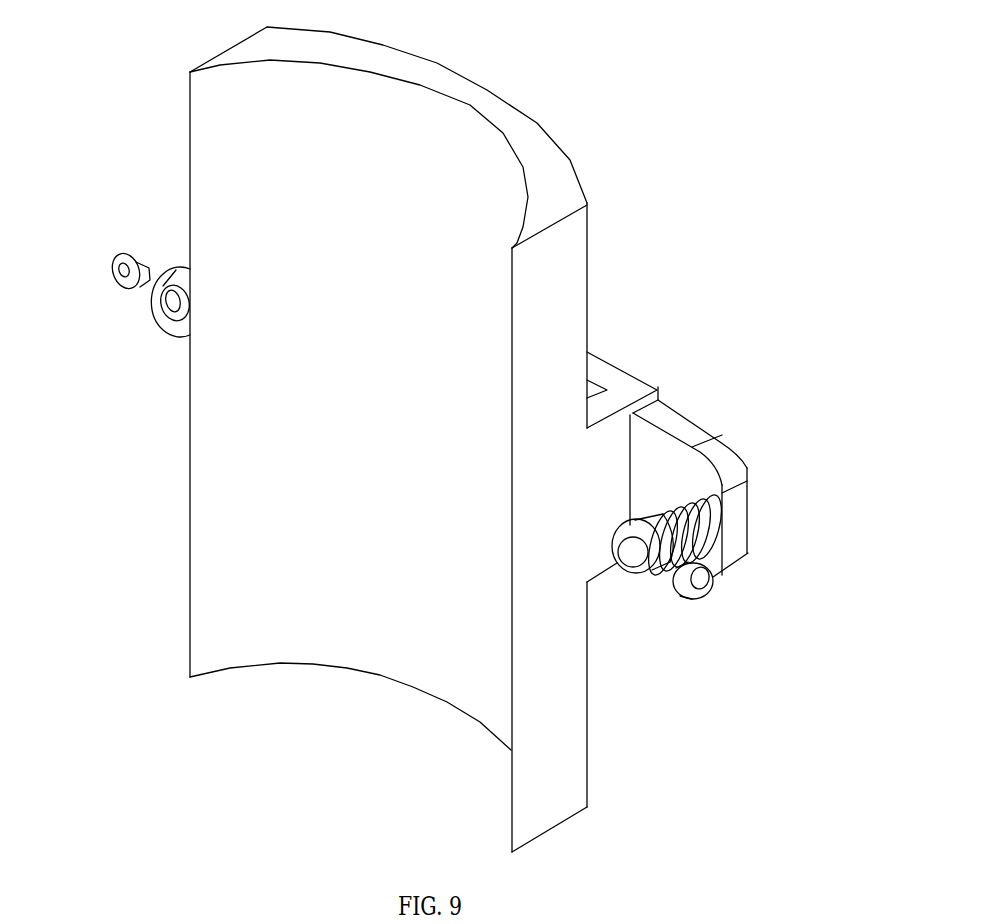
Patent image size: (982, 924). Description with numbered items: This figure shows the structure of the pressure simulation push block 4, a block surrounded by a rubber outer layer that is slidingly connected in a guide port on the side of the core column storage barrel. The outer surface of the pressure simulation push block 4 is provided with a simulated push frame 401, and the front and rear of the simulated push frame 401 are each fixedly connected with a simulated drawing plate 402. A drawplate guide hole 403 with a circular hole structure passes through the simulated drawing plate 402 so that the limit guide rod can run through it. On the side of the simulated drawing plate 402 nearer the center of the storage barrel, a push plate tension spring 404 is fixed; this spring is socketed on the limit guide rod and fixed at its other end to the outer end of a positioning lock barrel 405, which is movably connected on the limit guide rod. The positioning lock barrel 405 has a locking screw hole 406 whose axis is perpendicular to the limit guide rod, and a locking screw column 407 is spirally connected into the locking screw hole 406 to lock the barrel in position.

The pressure simulation push block 4 is at (456, 295).
The simulated push frame 401 is at (622, 372).
The simulated drawing plate 402 is at (677, 470).
The drawplate guide hole 403 is at (733, 555).
The push plate tension spring 404 is at (682, 507).
The positioning lock barrel 405 is at (632, 585).
The locking screw hole 406 is at (688, 602).
The locking screw column 407 is at (123, 252).